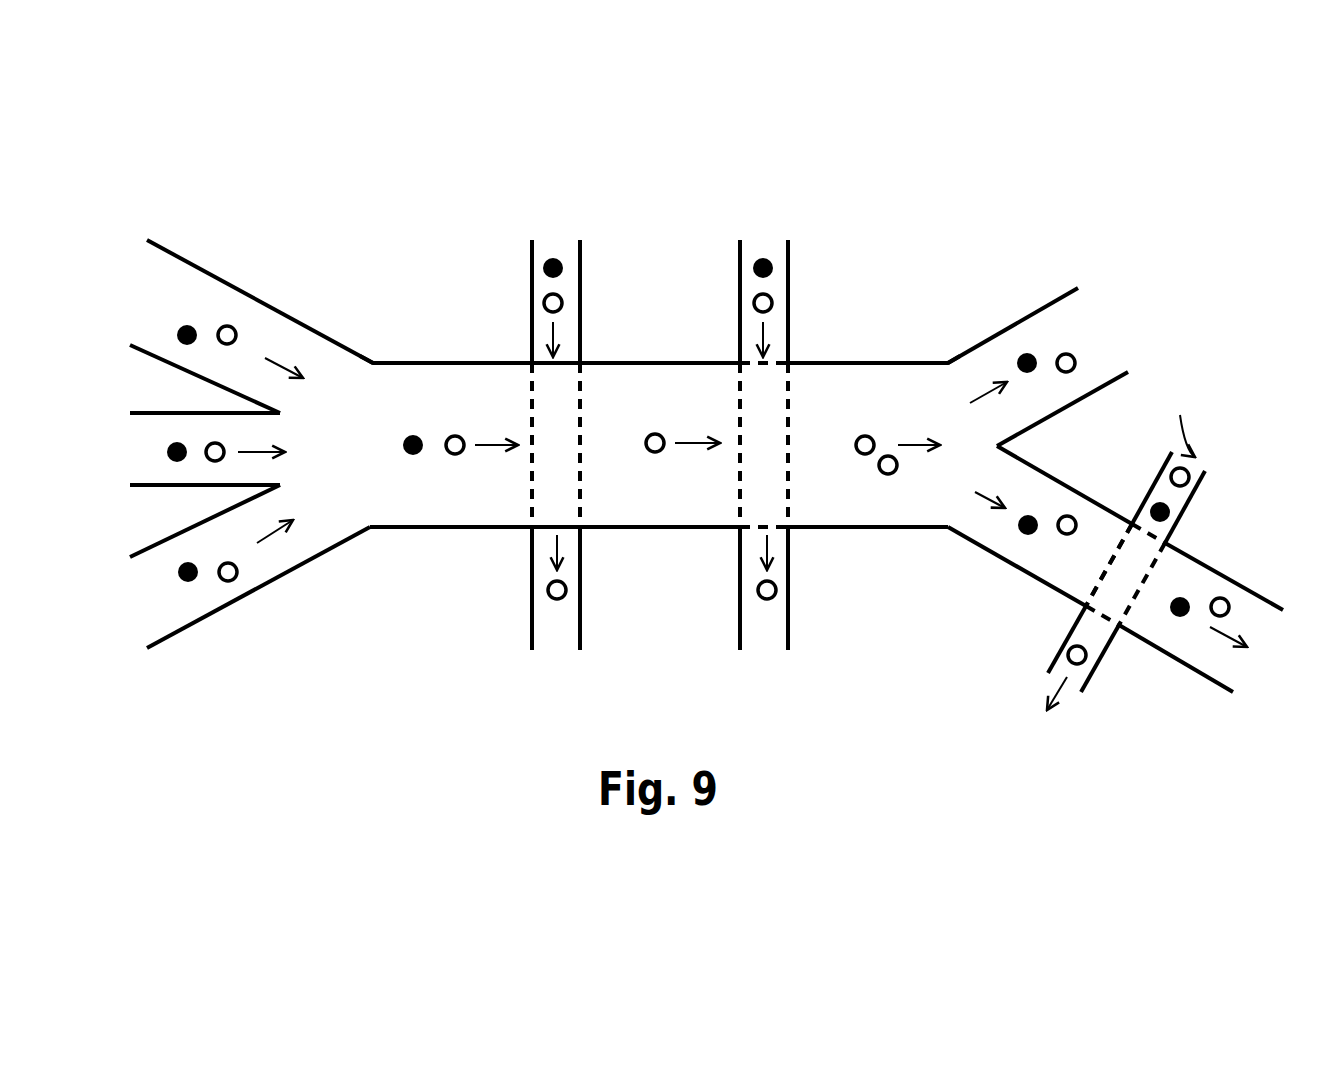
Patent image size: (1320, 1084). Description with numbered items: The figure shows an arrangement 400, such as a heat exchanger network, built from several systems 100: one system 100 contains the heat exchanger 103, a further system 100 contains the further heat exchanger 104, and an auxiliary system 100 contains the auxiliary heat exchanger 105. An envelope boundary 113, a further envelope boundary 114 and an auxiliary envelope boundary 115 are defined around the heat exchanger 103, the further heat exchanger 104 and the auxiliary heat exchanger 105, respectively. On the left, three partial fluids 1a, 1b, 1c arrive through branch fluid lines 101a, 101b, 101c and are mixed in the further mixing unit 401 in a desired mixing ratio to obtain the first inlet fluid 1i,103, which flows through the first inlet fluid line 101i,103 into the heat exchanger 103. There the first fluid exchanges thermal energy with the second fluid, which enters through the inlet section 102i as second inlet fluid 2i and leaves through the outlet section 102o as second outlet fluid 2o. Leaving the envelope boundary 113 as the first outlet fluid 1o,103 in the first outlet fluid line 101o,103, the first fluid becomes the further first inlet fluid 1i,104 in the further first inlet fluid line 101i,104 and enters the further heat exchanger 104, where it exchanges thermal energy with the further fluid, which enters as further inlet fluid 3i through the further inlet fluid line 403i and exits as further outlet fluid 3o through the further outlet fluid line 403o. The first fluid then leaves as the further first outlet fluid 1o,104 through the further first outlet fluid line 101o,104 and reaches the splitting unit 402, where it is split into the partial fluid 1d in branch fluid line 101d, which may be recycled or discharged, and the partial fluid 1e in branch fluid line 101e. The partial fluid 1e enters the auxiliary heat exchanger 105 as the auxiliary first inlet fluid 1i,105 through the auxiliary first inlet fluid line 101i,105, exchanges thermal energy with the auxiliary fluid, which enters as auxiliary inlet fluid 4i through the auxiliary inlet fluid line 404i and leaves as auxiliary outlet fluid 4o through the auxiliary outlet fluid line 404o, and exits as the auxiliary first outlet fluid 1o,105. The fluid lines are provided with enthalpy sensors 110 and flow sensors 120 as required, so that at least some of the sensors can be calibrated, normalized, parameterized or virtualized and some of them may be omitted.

The arrangement 400 is at (988, 228).
The system 100 is at (824, 456).
The branch fluid line 101a is at (165, 250).
The branch fluid line 101b is at (210, 488).
The branch fluid line 101c is at (205, 622).
The branch fluid line 101d is at (975, 345).
The branch fluid line 101e is at (1084, 569).
The partial fluid 1a is at (283, 357).
The partial fluid 1b is at (250, 440).
The partial fluid 1c is at (273, 530).
The partial fluid 1d is at (983, 395).
The partial fluid 1e is at (954, 547).
The further mixing unit 401 is at (375, 358).
The splitting unit 402 is at (945, 360).
The inlet section 102i is at (530, 278).
The outlet section 102o is at (530, 647).
The first cross flow inlet 2i is at (532, 348).
The first cross flow outlet 2o is at (562, 545).
The further inlet fluid line 403i is at (792, 258).
The further outlet fluid line 403o is at (740, 617).
The further inlet fluid 3i is at (790, 330).
The further outlet fluid 3o is at (795, 548).
The auxiliary inlet fluid line 404i is at (1142, 497).
The auxiliary outlet fluid line 404o is at (1050, 667).
The auxiliary inlet fluid 4i is at (1175, 416).
The auxiliary outlet fluid 4o is at (1068, 682).
The heat exchanger 103 is at (544, 467).
The further heat exchanger 104 is at (753, 467).
The auxiliary heat exchanger 105 is at (1128, 600).
The envelope boundary 113 is at (582, 438).
The further envelope boundary 114 is at (790, 440).
The auxiliary envelope boundary 115 is at (1092, 592).
The enthalpy sensors 110 is at (562, 310).
The flow sensors 120 is at (563, 273).
The first inlet fluid line 101i,103 is at (492, 530).
The first outlet fluid line 101o,103 is at (646, 360).
The further first inlet fluid line 101i,104 is at (720, 362).
The further first outlet fluid line 101o,104 is at (877, 530).
The auxiliary first inlet fluid line 101i,105 is at (1042, 587).
The first inlet fluid 1i,103 is at (495, 457).
The first outlet fluid 1o,103 is at (655, 486).
The further first inlet fluid 1i,104 is at (700, 452).
The further first outlet fluid 1o,104 is at (920, 450).
The auxiliary first inlet fluid 1i,105 is at (975, 497).
The auxiliary first outlet fluid 1o,105 is at (1210, 627).